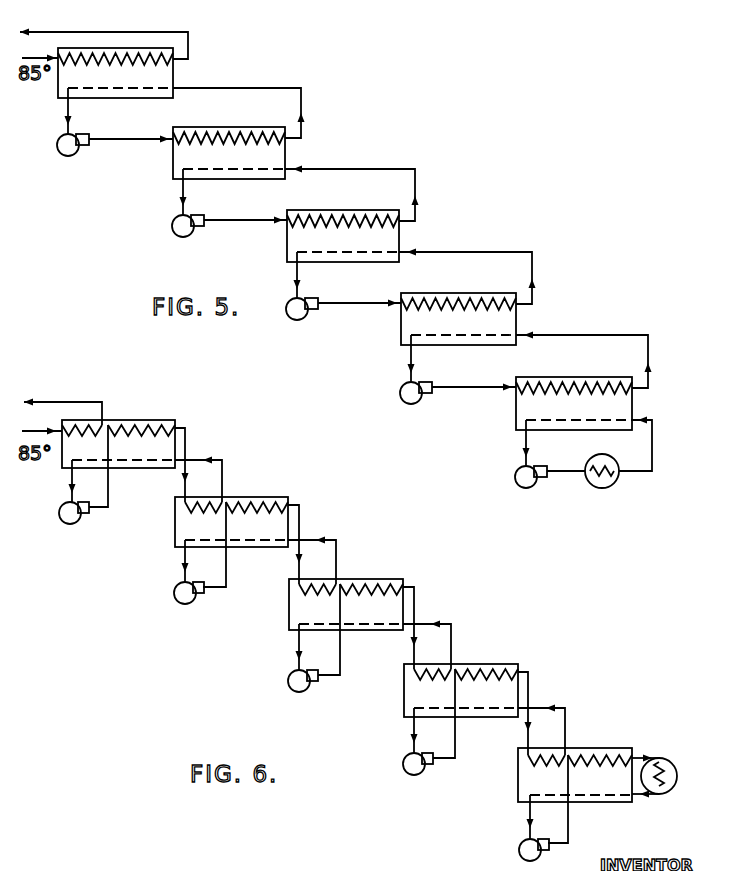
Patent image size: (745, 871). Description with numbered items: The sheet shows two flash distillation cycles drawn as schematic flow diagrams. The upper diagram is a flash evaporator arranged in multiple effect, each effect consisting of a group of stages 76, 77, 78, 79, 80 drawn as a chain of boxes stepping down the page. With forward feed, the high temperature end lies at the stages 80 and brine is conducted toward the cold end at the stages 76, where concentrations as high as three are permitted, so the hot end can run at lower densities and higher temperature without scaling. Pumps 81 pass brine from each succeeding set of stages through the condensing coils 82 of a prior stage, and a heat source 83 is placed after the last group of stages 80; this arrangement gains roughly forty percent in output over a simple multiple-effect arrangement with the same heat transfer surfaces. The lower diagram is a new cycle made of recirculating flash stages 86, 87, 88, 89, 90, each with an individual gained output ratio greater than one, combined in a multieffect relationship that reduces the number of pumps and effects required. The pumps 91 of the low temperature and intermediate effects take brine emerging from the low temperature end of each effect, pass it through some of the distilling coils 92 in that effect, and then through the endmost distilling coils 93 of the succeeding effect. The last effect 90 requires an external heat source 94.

In FIG. 5, the stage group 76 is at (173, 73).
In FIG. 5, the stage group 77 is at (287, 155).
In FIG. 5, the stage group 78 is at (399, 238).
In FIG. 5, the stage group 79 is at (516, 322).
In FIG. 5, the stage group 80 is at (516, 418).
In FIG. 5, the pump 81 is at (74, 153).
In FIG. 5, the condensing coil 82 is at (113, 57).
In FIG. 5, the heat source 83 is at (601, 489).
In FIG. 6, the recirculating flash stage group 86 is at (152, 469).
In FIG. 6, the recirculating flash stage group 87 is at (290, 495).
In FIG. 6, the recirculating flash stage group 88 is at (437, 556).
In FIG. 6, the recirculating flash stage group 89 is at (518, 664).
In FIG. 6, the last effect 90 is at (643, 735).
In FIG. 6, the pump 91 is at (66, 522).
In FIG. 6, the distilling coil 92 is at (153, 433).
In FIG. 6, the endmost distilling coil 93 is at (88, 430).
In FIG. 6, the external heat source 94 is at (668, 762).